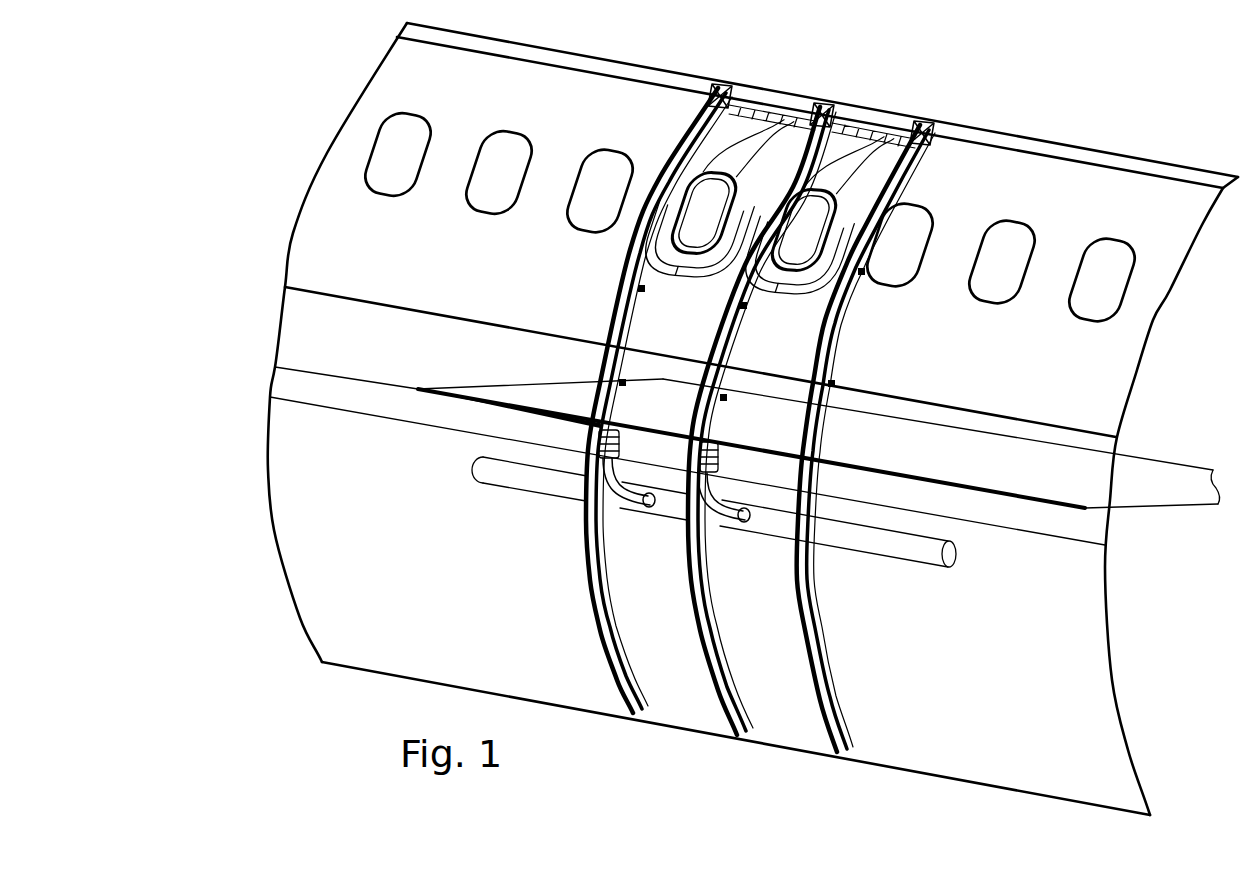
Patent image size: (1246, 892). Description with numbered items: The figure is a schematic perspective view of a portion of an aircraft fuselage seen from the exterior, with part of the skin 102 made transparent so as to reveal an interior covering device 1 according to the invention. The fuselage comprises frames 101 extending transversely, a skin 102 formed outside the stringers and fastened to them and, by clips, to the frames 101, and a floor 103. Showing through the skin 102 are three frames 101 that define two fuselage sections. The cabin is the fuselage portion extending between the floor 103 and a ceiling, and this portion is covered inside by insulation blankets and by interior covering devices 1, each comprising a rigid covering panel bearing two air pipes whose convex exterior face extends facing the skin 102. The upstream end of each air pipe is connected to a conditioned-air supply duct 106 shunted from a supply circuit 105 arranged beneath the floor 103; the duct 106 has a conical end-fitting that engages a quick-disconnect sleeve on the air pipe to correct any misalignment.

The interior covering device 1 is at (633, 408).
The frame 101 is at (862, 358).
The skin 102 is at (1125, 368).
The floor 103 is at (1147, 488).
The supply circuit 105 is at (513, 478).
The duct 106 is at (647, 500).